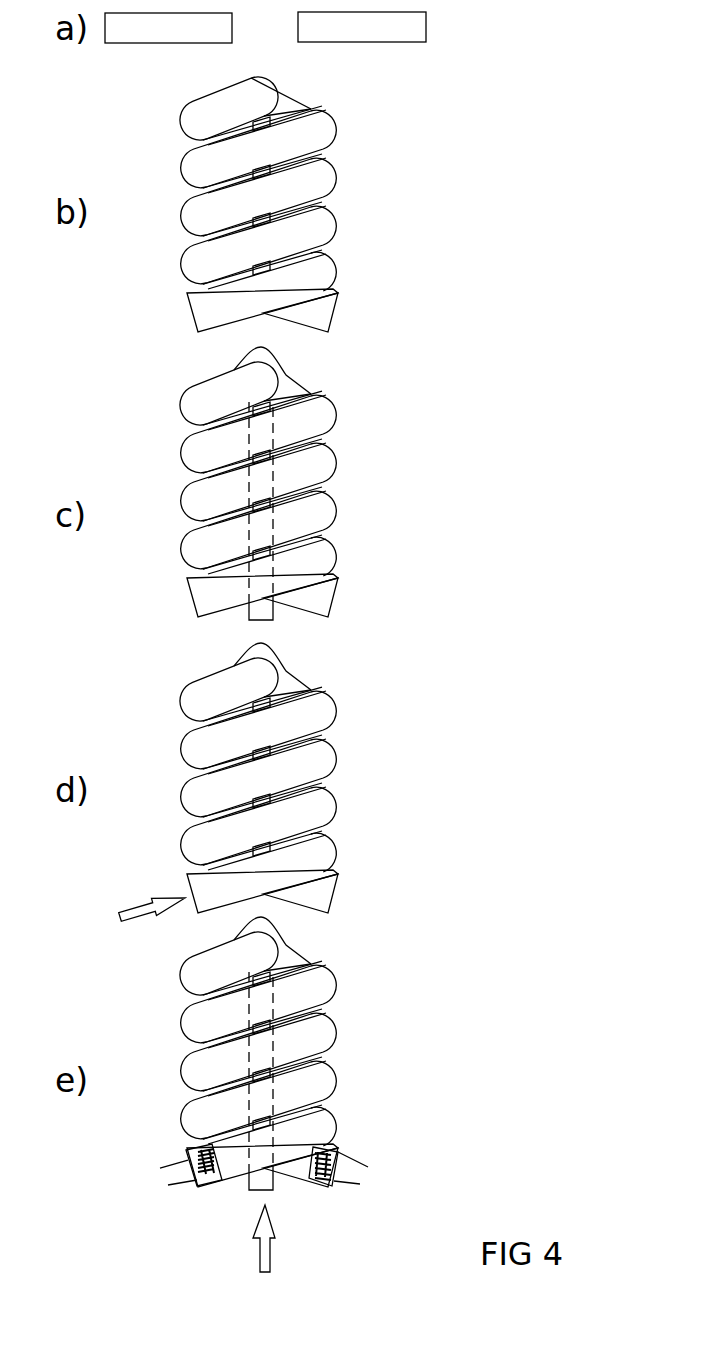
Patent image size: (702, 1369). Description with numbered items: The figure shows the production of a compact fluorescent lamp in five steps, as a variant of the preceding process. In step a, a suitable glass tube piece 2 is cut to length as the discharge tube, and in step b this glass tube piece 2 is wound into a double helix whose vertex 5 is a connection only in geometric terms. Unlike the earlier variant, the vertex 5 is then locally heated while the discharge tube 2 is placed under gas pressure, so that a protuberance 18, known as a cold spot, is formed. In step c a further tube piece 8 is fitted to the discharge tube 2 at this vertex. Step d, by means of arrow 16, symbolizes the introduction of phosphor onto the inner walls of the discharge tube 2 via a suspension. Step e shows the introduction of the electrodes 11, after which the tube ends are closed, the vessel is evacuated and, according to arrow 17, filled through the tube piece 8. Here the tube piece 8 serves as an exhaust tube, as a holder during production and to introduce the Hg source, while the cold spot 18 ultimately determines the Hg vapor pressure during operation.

The glass tube piece 2 is at (417, 26).
The vertex of the helix 5 is at (258, 79).
The protuberance 18 is at (263, 347).
The tube piece 8 is at (275, 433).
The arrow 16 is at (122, 921).
The electrodes 11 is at (181, 1187).
The arrow 17 is at (268, 1253).